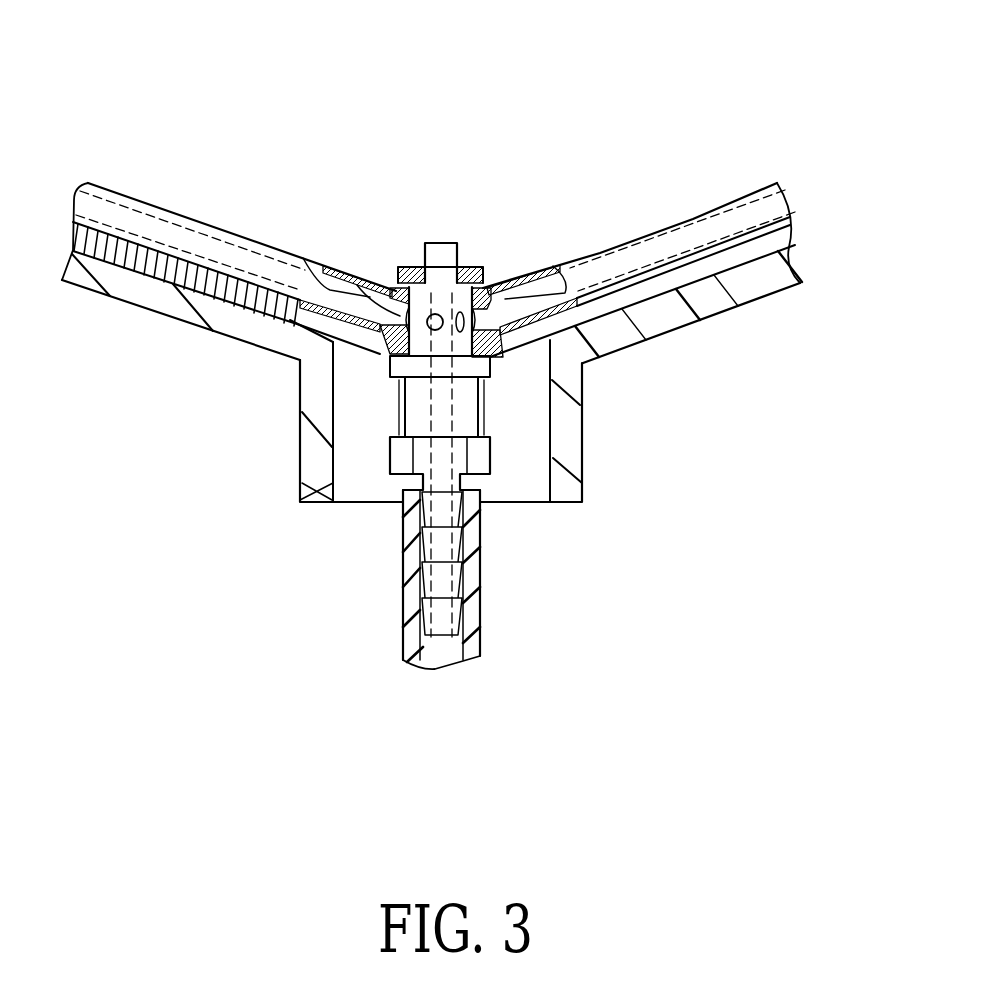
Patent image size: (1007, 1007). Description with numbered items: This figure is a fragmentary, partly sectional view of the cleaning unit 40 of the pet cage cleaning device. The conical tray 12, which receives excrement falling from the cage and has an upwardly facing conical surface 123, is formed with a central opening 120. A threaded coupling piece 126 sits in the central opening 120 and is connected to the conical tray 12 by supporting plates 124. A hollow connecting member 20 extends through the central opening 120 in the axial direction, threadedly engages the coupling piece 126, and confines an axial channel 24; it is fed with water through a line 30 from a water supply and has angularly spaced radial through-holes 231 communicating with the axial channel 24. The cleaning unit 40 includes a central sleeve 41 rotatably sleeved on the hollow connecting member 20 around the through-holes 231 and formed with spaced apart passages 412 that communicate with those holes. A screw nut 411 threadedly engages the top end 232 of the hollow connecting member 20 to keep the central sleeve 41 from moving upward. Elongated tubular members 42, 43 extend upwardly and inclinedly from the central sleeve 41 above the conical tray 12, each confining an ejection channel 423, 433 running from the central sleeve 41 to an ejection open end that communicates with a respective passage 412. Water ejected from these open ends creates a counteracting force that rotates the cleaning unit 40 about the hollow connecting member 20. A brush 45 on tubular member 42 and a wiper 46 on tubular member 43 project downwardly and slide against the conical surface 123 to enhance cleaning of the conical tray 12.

The conical tray 12 is at (133, 305).
The hollow connecting member 20 is at (503, 498).
The axial channel 24 is at (447, 426).
The line 30 is at (385, 677).
The cleaning unit 40 is at (213, 180).
The central sleeve 41 is at (392, 286).
The elongated tubular member 42 is at (151, 188).
The elongated tubular member 43 is at (747, 180).
The brush 45 is at (108, 222).
The wiper 46 is at (689, 268).
The central opening 120 is at (533, 400).
The conical surface 123 is at (117, 270).
The supporting plates 124 is at (300, 503).
The threaded coupling piece 126 is at (400, 395).
The radial through-holes 231 is at (441, 265).
The top end 232 is at (435, 313).
The screw nut 411 is at (412, 267).
The passages 412 is at (358, 270).
The ejection channel 423 is at (298, 255).
The ejection channel 433 is at (553, 266).